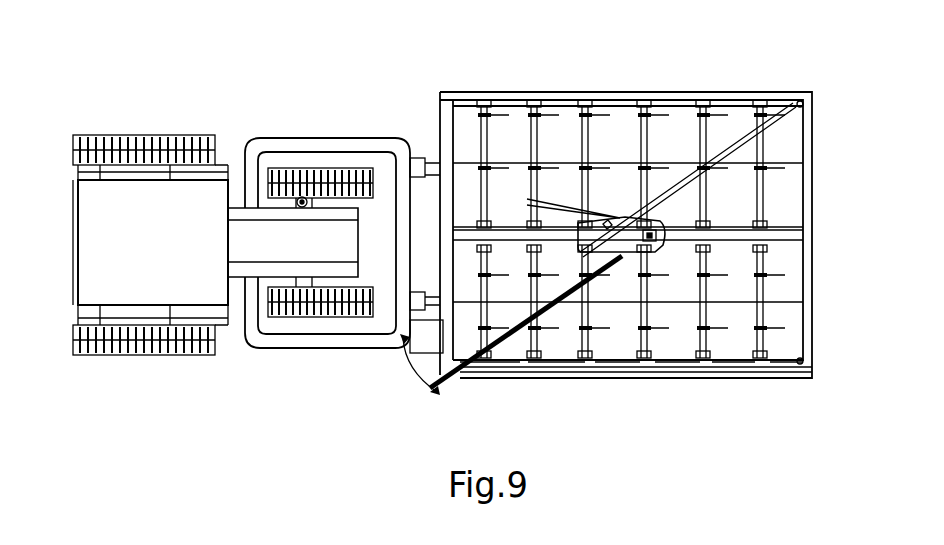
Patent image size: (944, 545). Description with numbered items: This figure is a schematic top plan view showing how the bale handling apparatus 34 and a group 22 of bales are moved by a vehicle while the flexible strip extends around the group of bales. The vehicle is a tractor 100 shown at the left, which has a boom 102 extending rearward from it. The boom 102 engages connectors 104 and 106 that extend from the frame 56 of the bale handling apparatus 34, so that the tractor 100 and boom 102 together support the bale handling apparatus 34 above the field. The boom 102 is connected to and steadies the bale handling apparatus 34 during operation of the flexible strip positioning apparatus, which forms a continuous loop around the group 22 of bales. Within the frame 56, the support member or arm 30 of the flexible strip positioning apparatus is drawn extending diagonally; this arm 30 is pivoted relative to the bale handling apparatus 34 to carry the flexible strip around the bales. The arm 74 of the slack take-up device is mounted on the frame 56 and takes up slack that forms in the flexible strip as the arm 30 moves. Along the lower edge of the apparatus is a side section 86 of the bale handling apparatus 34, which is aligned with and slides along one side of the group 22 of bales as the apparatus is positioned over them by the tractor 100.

The tractor 100 is at (234, 146).
The boom 102 is at (362, 148).
The connector 104 is at (418, 158).
The connector 106 is at (403, 307).
The group of bales 22 is at (690, 78).
The frame 56 is at (577, 105).
The arm 74 is at (740, 118).
The support member or arm 30 is at (498, 340).
The side section 86 is at (650, 380).
The bale handling apparatus 34 is at (741, 382).